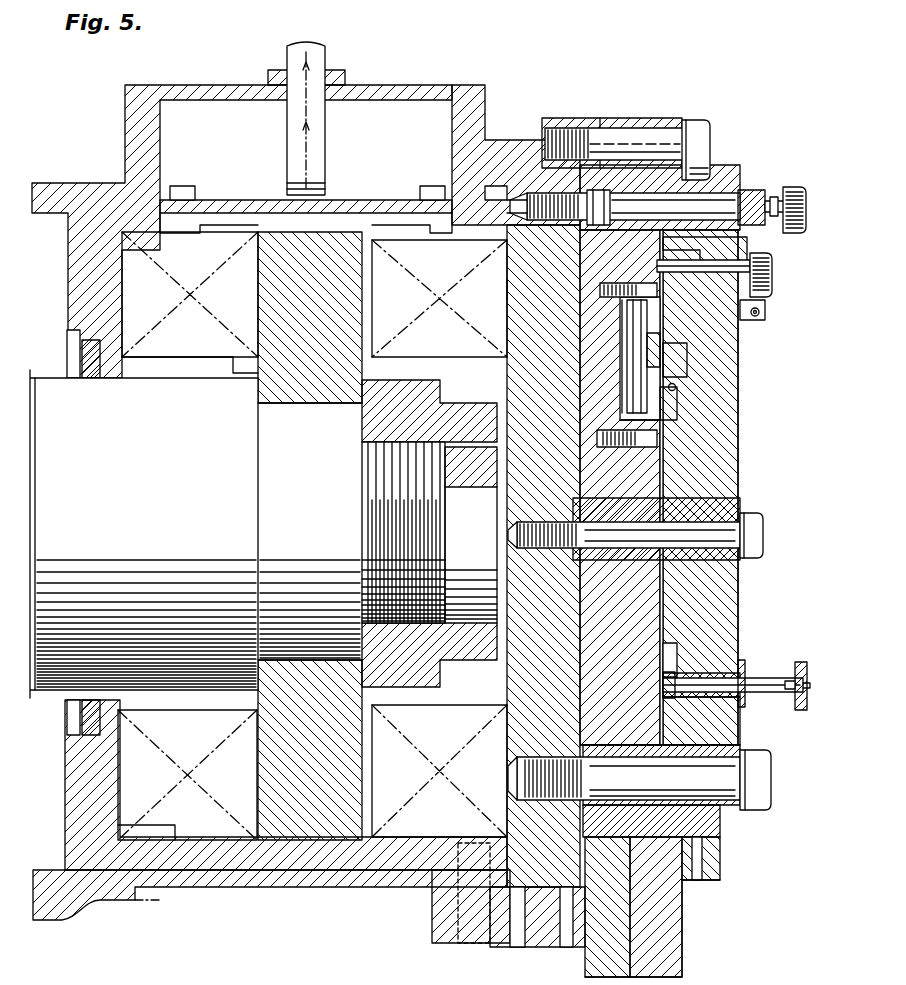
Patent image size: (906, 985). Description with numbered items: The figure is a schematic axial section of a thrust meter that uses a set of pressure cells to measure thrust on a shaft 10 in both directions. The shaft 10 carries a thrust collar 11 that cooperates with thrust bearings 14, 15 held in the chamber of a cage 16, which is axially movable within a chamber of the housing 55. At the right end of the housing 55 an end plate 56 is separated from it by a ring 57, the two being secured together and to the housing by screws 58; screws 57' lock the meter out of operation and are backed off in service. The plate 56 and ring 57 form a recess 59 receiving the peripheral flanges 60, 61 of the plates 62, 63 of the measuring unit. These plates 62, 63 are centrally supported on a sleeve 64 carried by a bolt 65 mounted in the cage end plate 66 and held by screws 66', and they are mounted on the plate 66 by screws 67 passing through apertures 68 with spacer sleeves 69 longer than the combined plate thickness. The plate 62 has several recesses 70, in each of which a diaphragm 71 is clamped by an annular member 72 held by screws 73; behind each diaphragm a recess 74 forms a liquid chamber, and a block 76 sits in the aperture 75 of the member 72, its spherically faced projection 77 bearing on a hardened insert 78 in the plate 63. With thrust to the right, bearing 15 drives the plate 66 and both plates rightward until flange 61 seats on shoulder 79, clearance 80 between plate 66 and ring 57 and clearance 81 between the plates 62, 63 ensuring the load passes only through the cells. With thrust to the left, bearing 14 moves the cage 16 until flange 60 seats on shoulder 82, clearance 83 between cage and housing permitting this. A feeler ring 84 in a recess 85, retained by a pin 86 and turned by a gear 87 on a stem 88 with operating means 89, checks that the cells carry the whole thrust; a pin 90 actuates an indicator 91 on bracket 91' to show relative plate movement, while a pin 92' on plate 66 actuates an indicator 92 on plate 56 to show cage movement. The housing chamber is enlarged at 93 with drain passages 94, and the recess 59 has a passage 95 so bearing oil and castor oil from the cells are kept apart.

The shaft 10 is at (60, 385).
The thrust collar 11 is at (330, 250).
The thrust bearing 14 is at (215, 252).
The thrust bearing 15 is at (390, 258).
The cage 16 is at (284, 868).
The housing 55 is at (568, 135).
The end plate 56 is at (650, 140).
The ring 57 is at (675, 129).
The screws 57' is at (766, 185).
The bolts or screws 58 is at (600, 135).
The recess 59 is at (703, 197).
The peripheral flange 60 is at (700, 204).
The peripheral flange 61 is at (774, 197).
The plate 62 is at (596, 366).
The plate 63 is at (724, 375).
The sleeve 64 is at (700, 487).
The bolt or screw 65 is at (717, 527).
The end plate 66 is at (495, 303).
The bolts or screws 66' is at (530, 162).
The bolts or screws 67 is at (657, 787).
The apertures 68 is at (627, 742).
The spacer sleeves 69 is at (742, 708).
The recesses 70 is at (620, 487).
The diaphragm 71 is at (622, 337).
The annular member 72 is at (605, 302).
The screws 73 is at (658, 283).
The recess 74 is at (620, 395).
The aperture 75 is at (678, 397).
The block 76 is at (645, 355).
The spherically faced rear projection 77 is at (680, 370).
The hardened insert 78 is at (662, 343).
The shoulder 79 is at (700, 247).
The clearance 80 is at (620, 237).
The clearance 81 is at (660, 613).
The shoulder 82 is at (612, 200).
The clearance 83 is at (497, 193).
The feeler ring 84 is at (673, 670).
The recess 85 is at (673, 642).
The pin 86 is at (676, 387).
The gear 87 is at (666, 686).
The stem 88 is at (790, 690).
The operating means 89 is at (797, 675).
The pin 90 is at (713, 272).
The indicator 91 is at (782, 277).
The bracket 91' is at (769, 318).
The indicator 92 is at (797, 228).
The pin 92' is at (794, 178).
The enlarged chamber portion 93 is at (473, 913).
The passages 94 is at (463, 945).
The passage 95 is at (693, 857).